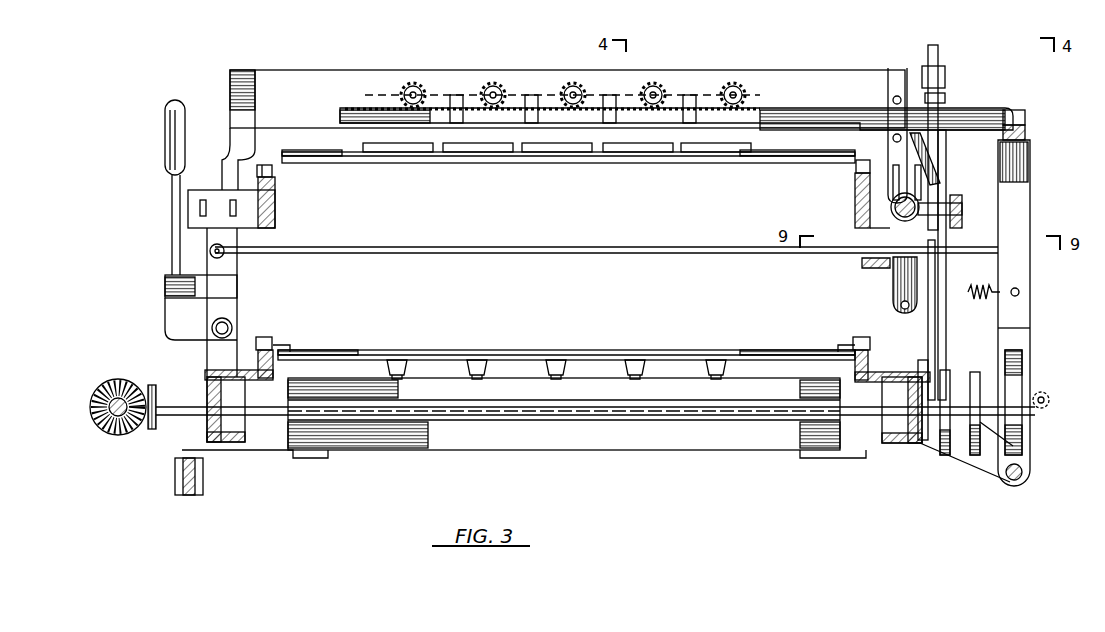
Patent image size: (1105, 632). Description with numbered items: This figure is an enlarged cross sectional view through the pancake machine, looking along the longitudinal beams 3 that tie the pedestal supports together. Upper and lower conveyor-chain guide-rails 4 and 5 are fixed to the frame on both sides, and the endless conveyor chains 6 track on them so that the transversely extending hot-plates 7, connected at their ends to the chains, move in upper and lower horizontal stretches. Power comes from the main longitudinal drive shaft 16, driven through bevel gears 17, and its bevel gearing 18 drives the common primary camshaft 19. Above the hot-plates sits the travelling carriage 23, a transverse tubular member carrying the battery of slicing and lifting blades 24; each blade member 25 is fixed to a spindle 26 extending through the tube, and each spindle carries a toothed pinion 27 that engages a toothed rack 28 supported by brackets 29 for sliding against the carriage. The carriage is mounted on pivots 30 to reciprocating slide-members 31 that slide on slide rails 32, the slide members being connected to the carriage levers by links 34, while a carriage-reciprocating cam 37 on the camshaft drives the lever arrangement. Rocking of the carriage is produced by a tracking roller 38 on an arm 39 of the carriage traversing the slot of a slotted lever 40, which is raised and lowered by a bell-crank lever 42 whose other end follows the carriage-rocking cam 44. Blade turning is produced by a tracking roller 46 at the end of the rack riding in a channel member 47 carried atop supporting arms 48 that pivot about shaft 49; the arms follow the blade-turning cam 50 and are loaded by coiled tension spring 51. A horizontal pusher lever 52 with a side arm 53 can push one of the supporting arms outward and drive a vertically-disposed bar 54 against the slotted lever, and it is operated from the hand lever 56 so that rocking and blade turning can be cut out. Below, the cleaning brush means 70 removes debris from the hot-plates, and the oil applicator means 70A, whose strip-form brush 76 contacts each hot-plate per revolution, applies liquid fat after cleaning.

The longitudinal beams 3 is at (207, 428).
The upper conveyor-chain guide-rail 4 is at (276, 214).
The lower conveyor-chain guide-rail 5 is at (275, 366).
The endless conveyor chains 6 is at (273, 172).
The hot-plates 7 is at (392, 164).
The main longitudinal drive shaft 16 is at (112, 380).
The bevel gears 17 is at (185, 495).
The bevel gearing 18 is at (140, 432).
The common primary camshaft 19 is at (598, 416).
The travelling carriage 23 is at (774, 72).
The pancake slicing and lifting blades 24 is at (556, 74).
The blade members 25 is at (388, 95).
The spindle 26 is at (418, 86).
The toothed pinion 27 is at (497, 84).
The toothed rack 28 is at (352, 112).
The brackets 29 is at (456, 125).
The pivots 30 is at (945, 172).
The reciprocating slide-members 31 is at (900, 216).
The slide rails 32 is at (947, 195).
The links 34 is at (963, 216).
The carriage-reciprocating cam 37 is at (975, 456).
The tracking roller 38 is at (946, 78).
The arm 39 is at (912, 74).
The slotted lever 40 is at (940, 52).
The bell-crank lever 42 is at (946, 323).
The carriage-rocking cam 44 is at (950, 362).
The tracking roller 46 is at (1027, 160).
The channel member 47 is at (1026, 141).
The supporting arms 48 is at (1031, 278).
The shaft 49 is at (1050, 399).
The blade-turning cam 50 is at (1022, 375).
The coiled tension spring 51 is at (982, 287).
The pusher lever 52 is at (860, 265).
The side arm 53 is at (520, 247).
The vertically-disposed bar 54 is at (945, 150).
The hand lever 56 is at (168, 176).
The cleaning brush means 70 is at (733, 432).
The oil applicator means 70A is at (438, 461).
The strip-form brush 76 is at (436, 360).